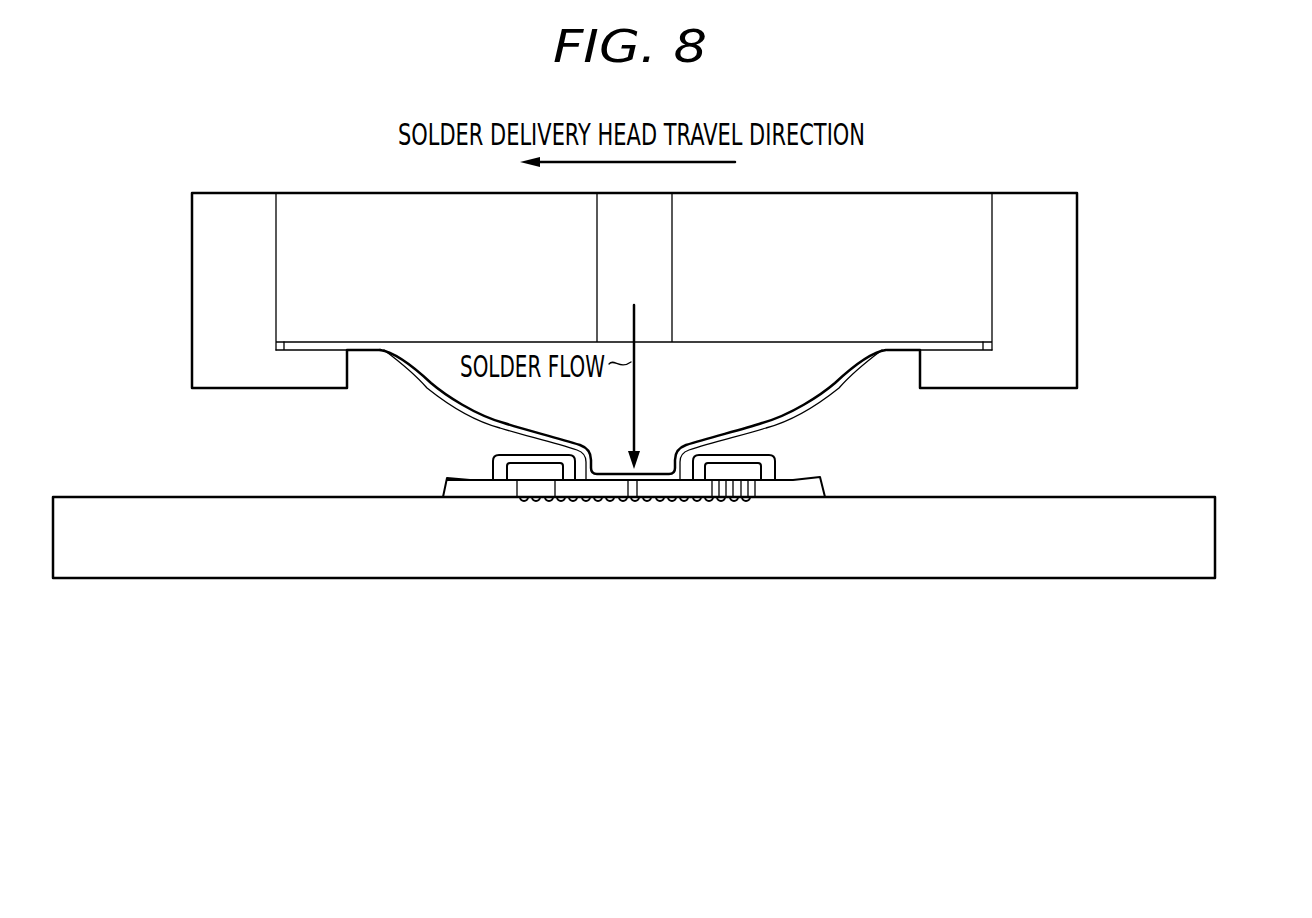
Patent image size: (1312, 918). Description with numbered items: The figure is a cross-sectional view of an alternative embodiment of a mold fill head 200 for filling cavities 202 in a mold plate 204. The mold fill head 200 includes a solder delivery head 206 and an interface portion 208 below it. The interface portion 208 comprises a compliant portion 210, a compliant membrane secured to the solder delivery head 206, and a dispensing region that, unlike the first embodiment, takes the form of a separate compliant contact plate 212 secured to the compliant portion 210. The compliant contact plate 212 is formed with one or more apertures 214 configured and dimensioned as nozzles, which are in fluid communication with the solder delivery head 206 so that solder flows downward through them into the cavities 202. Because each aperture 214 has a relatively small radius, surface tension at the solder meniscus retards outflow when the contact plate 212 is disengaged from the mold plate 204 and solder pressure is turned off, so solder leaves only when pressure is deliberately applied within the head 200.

The mold fill head 200 is at (1077, 283).
The cavities 202 is at (675, 503).
The mold plate 204 is at (1215, 537).
The solder delivery head 206 is at (915, 193).
The interface portion 208 is at (903, 352).
The compliant portion 210 is at (514, 417).
The compliant contact plate 212 is at (828, 492).
The aperture 214 is at (642, 494).